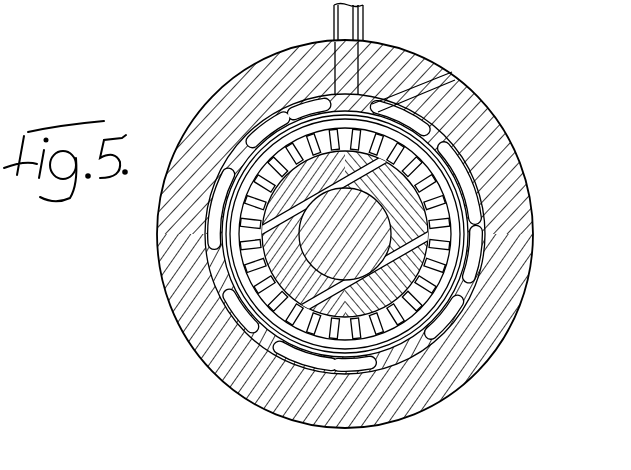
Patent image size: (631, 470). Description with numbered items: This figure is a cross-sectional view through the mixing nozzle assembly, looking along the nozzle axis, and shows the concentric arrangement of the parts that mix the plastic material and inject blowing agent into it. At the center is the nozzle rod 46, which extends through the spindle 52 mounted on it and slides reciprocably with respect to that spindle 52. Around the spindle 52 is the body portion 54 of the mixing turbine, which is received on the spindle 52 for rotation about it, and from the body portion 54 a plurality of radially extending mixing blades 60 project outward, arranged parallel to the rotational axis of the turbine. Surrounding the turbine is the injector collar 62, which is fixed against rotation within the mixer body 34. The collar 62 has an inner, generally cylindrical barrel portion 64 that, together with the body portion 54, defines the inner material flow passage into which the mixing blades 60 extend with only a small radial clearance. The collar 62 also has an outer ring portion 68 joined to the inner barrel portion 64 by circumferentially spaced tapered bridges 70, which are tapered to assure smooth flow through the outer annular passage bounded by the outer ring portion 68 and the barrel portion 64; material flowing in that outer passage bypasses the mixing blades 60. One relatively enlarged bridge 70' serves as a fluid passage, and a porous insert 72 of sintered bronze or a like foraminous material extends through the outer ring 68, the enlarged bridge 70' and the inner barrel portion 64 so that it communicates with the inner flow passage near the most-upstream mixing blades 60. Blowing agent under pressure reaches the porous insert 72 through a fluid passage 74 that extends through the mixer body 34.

The mixer body 34 is at (520, 244).
The nozzle rod 46 is at (362, 270).
The spindle 52 is at (297, 212).
The body portion 54 is at (337, 315).
The mixing blades 60 is at (317, 132).
The injector collar 62 is at (504, 161).
The inner barrel portion 64 is at (452, 281).
The outer ring portion 68 is at (497, 202).
The tapered bridges 70 is at (294, 258).
The enlarged bridge 70' is at (451, 94).
The porous insert 72 is at (427, 51).
The fluid passage 74 is at (366, 21).